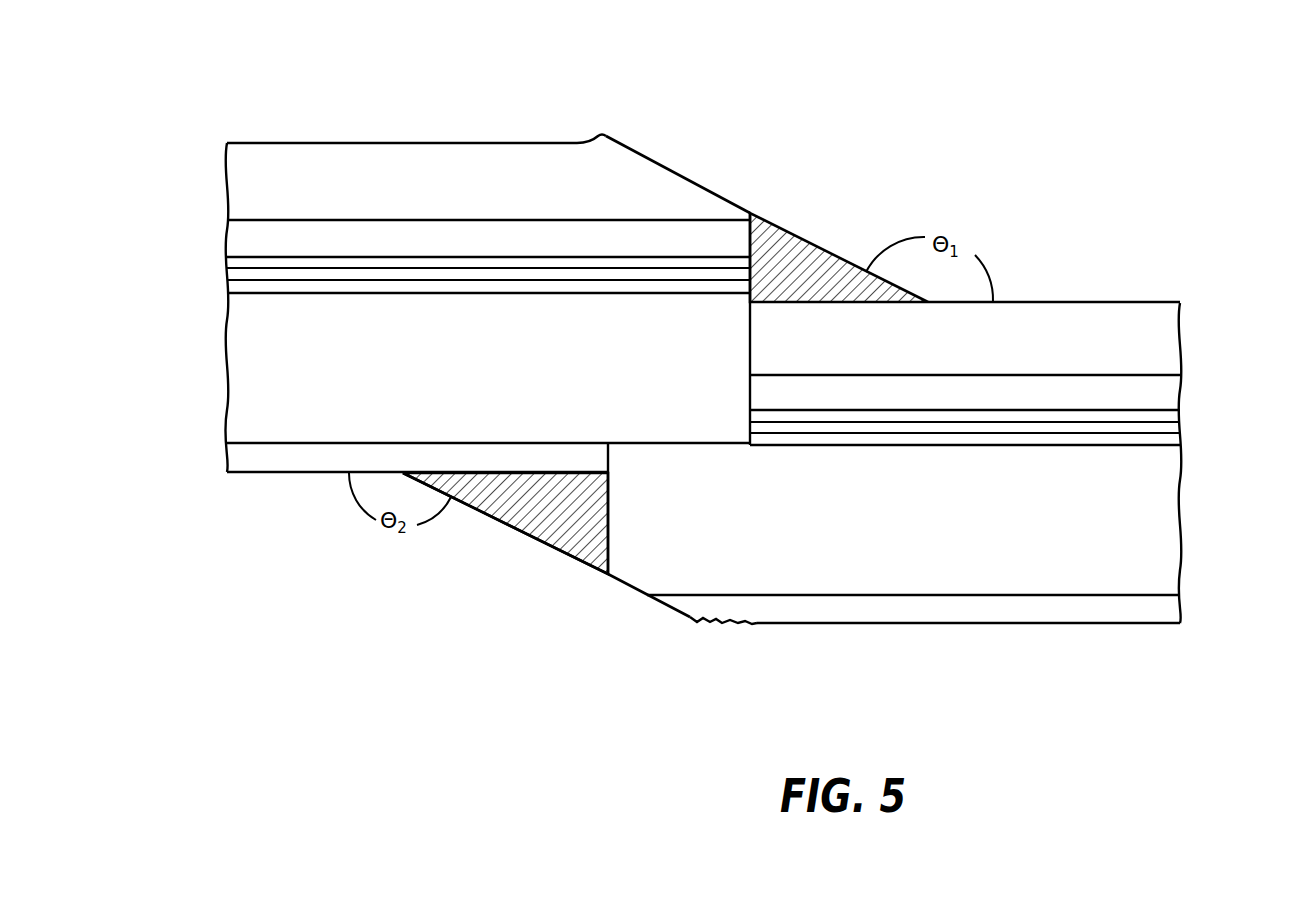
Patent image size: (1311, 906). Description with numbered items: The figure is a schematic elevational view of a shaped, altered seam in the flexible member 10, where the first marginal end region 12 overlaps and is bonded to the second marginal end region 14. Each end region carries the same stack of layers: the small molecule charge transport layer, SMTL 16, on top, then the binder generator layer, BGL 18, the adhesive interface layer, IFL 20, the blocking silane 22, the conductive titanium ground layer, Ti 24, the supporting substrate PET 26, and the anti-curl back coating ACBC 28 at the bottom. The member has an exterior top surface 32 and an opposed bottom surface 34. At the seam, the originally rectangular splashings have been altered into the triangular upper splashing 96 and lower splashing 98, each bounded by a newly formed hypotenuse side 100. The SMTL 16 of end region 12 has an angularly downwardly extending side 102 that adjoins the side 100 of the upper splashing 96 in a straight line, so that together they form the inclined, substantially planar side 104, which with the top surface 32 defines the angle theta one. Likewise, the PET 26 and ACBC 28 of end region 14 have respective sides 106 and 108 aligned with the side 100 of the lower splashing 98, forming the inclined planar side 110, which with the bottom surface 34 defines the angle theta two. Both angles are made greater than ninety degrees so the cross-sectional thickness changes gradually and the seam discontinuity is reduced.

The flexible member 10 is at (780, 79).
The first marginal end region 12 is at (635, 135).
The second marginal end region 14 is at (714, 636).
The small molecule charge transport layer (SMTL) 16 is at (242, 170).
The binder generator layer (BGL) 18 is at (238, 236).
The interface layer (IFL) 20 is at (232, 262).
The silane layer 22 is at (236, 276).
The titanium layer (Ti) 24 is at (235, 286).
The polyethylene terephthalate layer (PET) 26 is at (248, 375).
The anti-curl back coating layer (ACBC) 28 is at (243, 457).
The top surface 32 is at (457, 143).
The bottom surface 34 is at (283, 474).
The upper splashing 96 is at (852, 243).
The lower splashing 98 is at (502, 584).
The side 100 is at (813, 244).
The side of the SMTL 102 is at (668, 170).
The inclined planar side 104 is at (757, 188).
The side of the PET 106 is at (625, 590).
The side of the ACBC 108 is at (672, 610).
The inclined planar side 110 is at (606, 602).